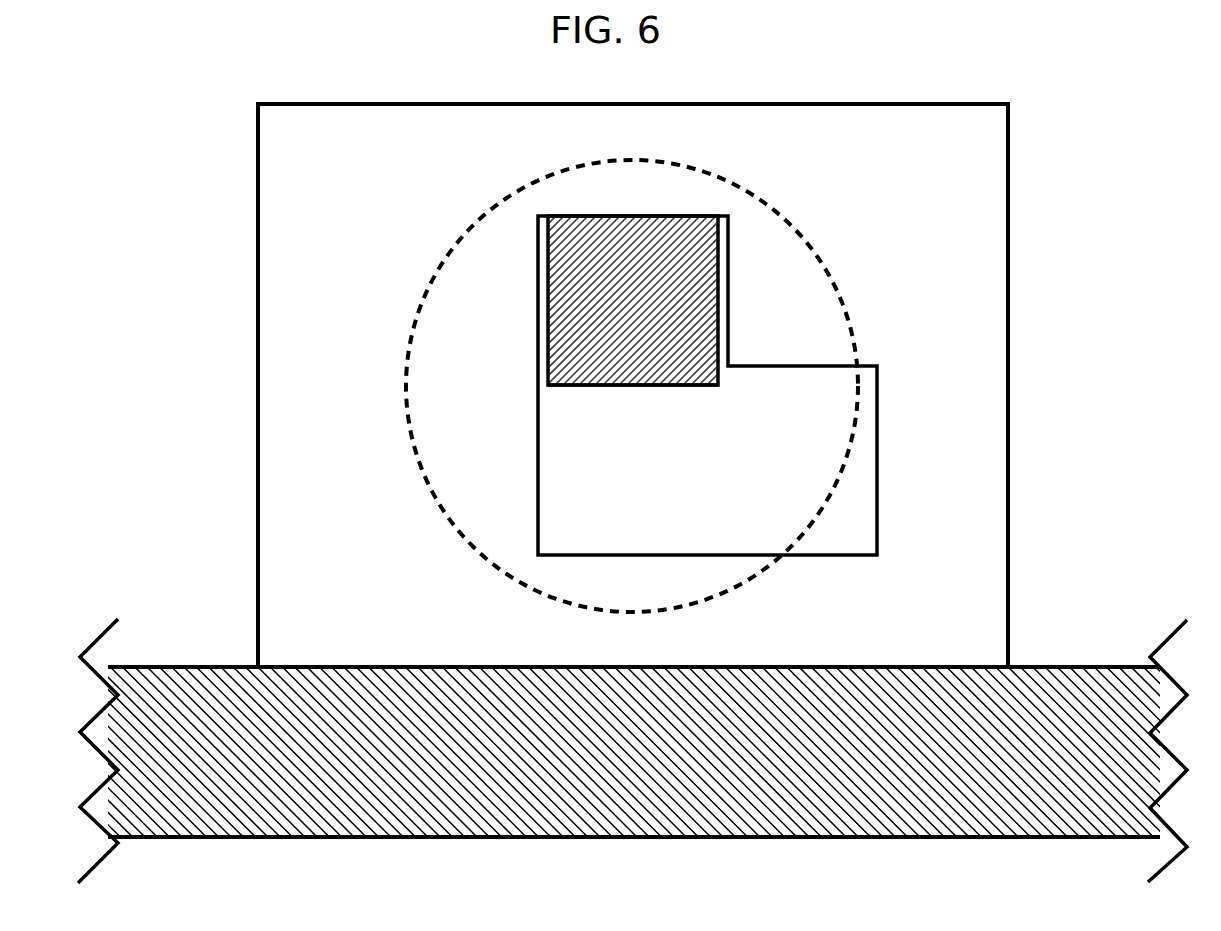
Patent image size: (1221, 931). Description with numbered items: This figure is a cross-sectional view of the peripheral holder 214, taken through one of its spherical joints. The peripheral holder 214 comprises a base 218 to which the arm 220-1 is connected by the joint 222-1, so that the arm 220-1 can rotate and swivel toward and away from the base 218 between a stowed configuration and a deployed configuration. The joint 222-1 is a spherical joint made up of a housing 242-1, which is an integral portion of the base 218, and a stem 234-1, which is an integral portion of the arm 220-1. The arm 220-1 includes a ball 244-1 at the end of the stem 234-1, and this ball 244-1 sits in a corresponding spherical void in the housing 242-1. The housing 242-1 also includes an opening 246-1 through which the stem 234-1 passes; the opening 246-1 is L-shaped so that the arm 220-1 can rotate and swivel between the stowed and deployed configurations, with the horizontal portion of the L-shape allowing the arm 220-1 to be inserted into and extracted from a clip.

The peripheral holder 214 is at (170, 179).
The base 218 is at (183, 667).
The joint 222-1 is at (255, 306).
The housing 242-1 is at (258, 440).
The ball 244-1 is at (797, 233).
The opening 246-1 is at (597, 553).
The stem 234-1 is at (635, 387).
The arm 220-1 is at (582, 392).